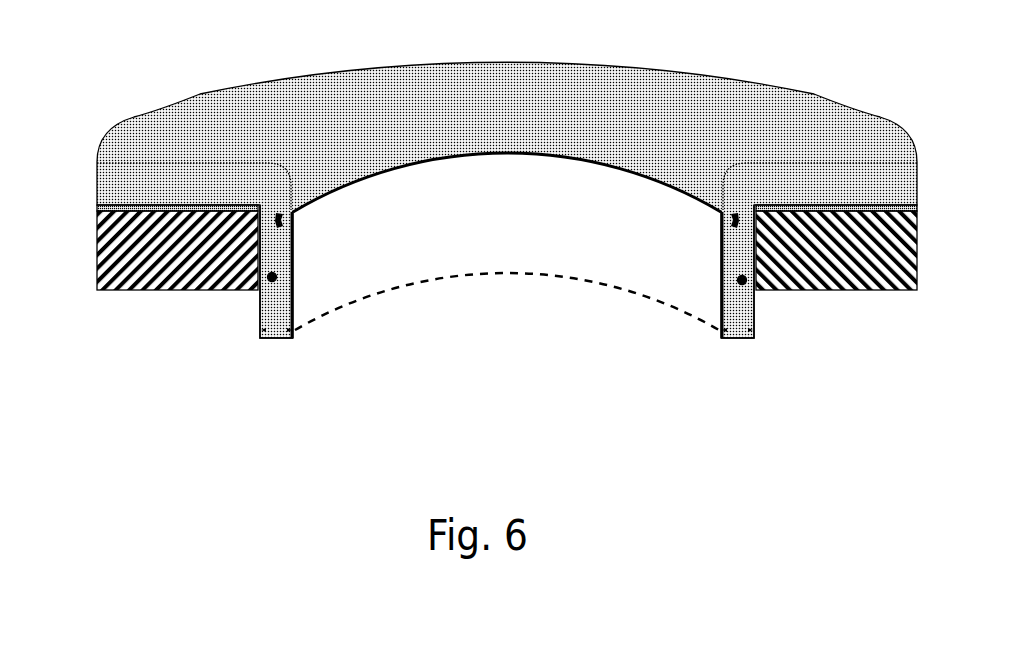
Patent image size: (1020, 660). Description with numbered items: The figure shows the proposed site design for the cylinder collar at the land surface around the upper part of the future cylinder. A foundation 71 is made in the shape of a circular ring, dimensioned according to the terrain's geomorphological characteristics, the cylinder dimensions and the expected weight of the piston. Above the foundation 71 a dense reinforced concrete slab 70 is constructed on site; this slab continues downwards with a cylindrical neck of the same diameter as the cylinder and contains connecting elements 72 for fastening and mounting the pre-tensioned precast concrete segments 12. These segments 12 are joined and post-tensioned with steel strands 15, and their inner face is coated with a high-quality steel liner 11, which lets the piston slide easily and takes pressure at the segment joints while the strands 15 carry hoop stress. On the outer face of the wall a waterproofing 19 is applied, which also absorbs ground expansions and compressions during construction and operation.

The steel liner 11 is at (295, 249).
The pre-tensioned precast concrete segments 12 is at (263, 310).
The steel strands 15 is at (276, 278).
The waterproofing 19 is at (117, 207).
The dense reinforced concrete slab 70 is at (194, 176).
The foundation 71 is at (148, 262).
The connecting elements 72 is at (277, 211).